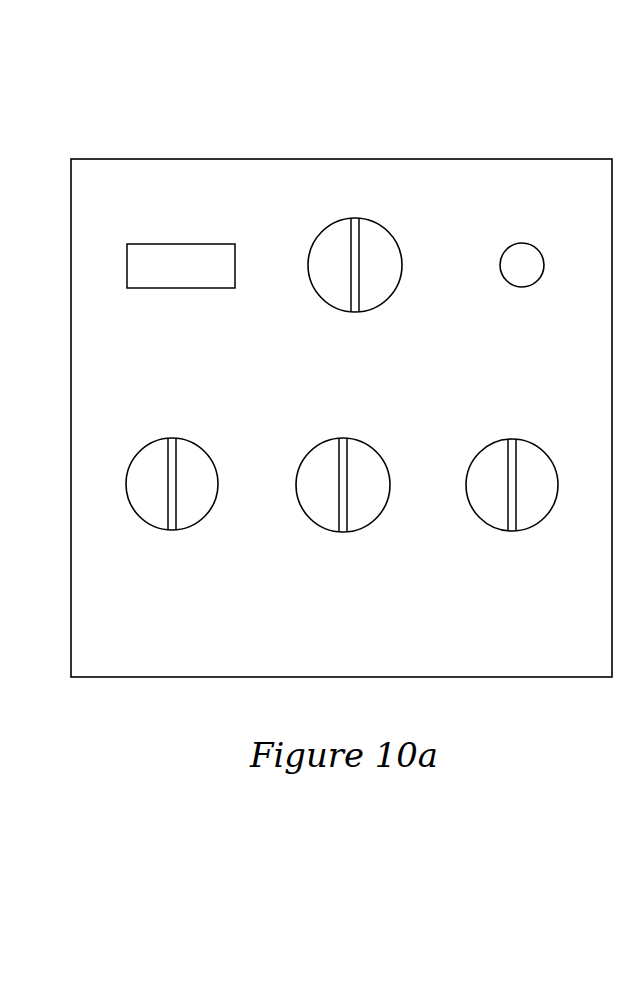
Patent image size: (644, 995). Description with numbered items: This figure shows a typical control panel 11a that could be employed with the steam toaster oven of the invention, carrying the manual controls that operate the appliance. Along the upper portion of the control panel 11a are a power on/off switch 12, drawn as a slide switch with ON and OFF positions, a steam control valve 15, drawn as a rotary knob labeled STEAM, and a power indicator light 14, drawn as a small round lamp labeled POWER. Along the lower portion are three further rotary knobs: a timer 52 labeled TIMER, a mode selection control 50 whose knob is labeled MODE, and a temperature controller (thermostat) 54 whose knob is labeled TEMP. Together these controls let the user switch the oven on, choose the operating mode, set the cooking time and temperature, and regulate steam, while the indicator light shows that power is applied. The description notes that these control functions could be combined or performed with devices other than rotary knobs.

The control panel 11a is at (567, 97).
The power on/off switch 12 is at (175, 262).
The steam control valve 15 is at (382, 248).
The power indicator light 14 is at (523, 252).
The timer 52 is at (135, 482).
The temperature controller (thermostat) 54 is at (317, 499).
The mode selection control 50 is at (537, 515).